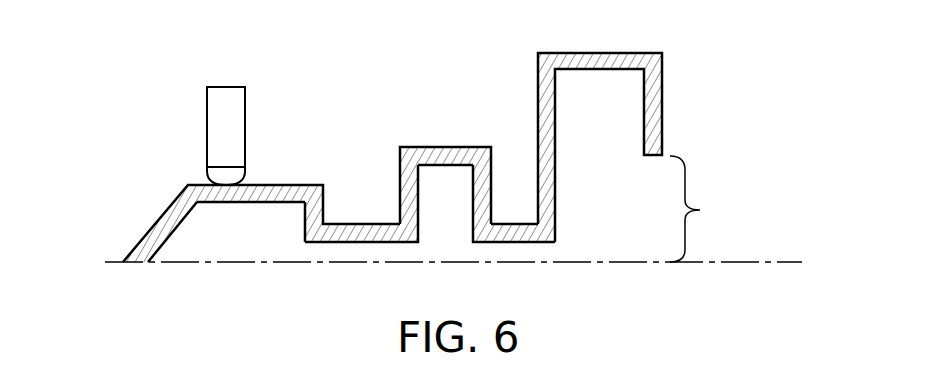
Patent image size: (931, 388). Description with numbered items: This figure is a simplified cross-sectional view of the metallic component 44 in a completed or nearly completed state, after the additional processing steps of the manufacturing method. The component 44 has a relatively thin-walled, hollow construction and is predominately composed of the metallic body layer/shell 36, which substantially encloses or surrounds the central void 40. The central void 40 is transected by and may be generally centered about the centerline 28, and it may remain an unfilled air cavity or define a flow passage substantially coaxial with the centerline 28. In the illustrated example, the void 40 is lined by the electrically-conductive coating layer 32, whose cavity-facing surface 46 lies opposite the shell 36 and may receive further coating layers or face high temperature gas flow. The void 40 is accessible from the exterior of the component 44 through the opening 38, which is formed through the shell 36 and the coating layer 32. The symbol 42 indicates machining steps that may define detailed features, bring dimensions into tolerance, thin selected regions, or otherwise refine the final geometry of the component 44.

The centerline 28 is at (755, 262).
The electrically-conductive coating layer 32 is at (597, 53).
The metallic body layer/shell 36 is at (478, 146).
The opening 38 is at (703, 209).
The central void 40 is at (465, 237).
The machining step symbol 42 is at (246, 128).
The metallic component 44 is at (137, 115).
The cavity-facing surface 46 is at (255, 203).